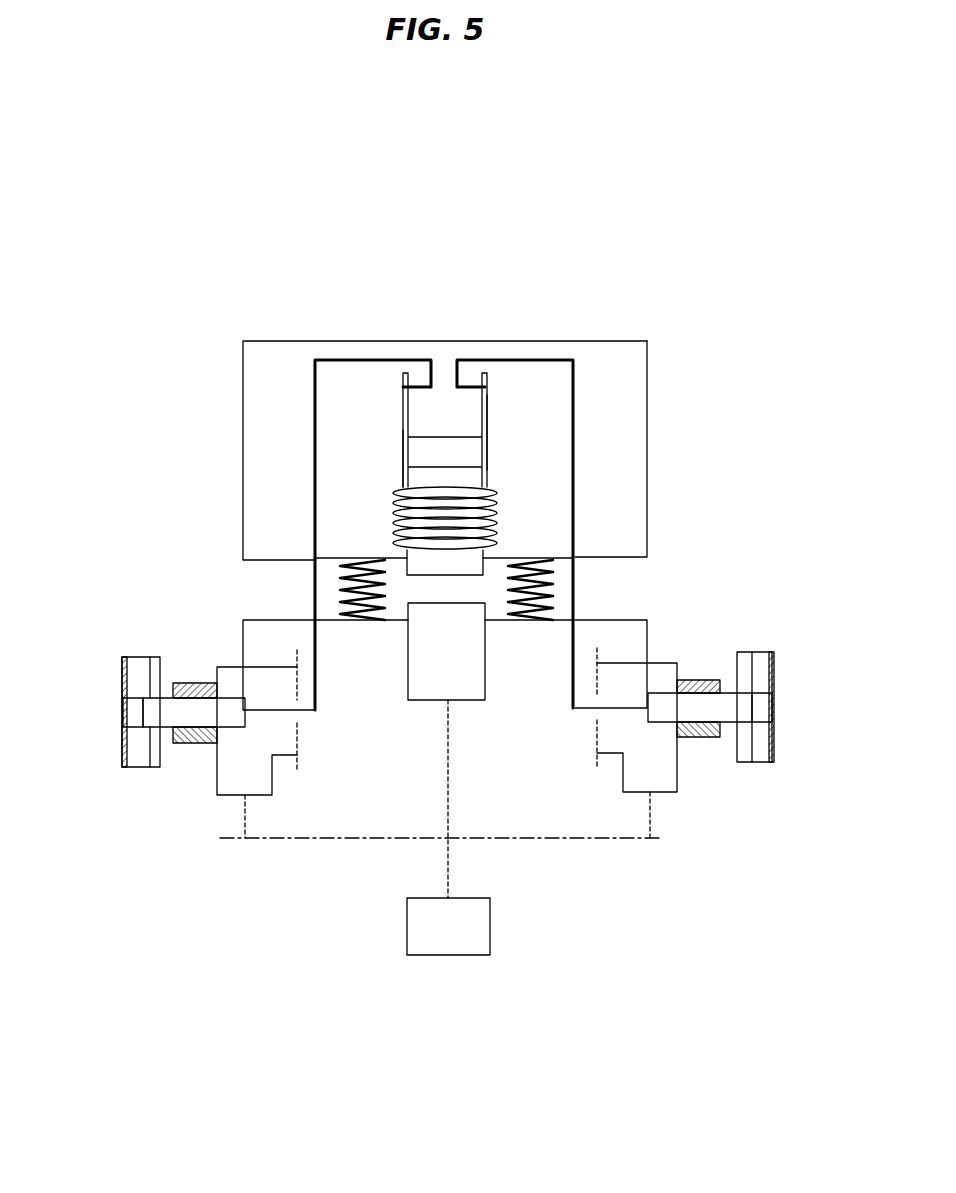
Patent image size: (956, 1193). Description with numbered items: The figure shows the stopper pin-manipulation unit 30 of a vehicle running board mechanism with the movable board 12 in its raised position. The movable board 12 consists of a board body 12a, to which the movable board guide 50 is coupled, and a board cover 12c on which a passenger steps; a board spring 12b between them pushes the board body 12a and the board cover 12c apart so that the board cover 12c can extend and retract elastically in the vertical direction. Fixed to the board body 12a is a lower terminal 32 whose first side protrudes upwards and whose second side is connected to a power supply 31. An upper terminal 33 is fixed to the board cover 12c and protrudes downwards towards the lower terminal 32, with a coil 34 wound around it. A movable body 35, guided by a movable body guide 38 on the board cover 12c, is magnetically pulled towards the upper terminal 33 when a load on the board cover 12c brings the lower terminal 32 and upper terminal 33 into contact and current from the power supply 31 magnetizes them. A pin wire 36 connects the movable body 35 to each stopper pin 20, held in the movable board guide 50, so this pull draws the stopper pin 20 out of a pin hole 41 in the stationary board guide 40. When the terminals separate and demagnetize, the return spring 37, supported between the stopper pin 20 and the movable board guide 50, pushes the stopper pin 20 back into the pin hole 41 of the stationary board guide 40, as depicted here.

The movable board 12 is at (360, 326).
The board body 12a is at (350, 822).
The board spring 12b is at (340, 580).
The board cover 12c is at (603, 352).
The stopper pin 20 is at (163, 712).
The stopper pin-manipulation unit 30 is at (372, 505).
The power supply 31 is at (448, 955).
The lower terminal 32 is at (475, 680).
The upper terminal 33 is at (400, 462).
The coil 34 is at (500, 512).
The movable body 35 is at (418, 392).
The pin wire 36 is at (315, 480).
The return spring 37 is at (690, 685).
The movable body guide 38 is at (487, 405).
The stationary board guide 40 is at (135, 742).
The pin hole 41 is at (125, 705).
The movable board guide 50 is at (665, 777).